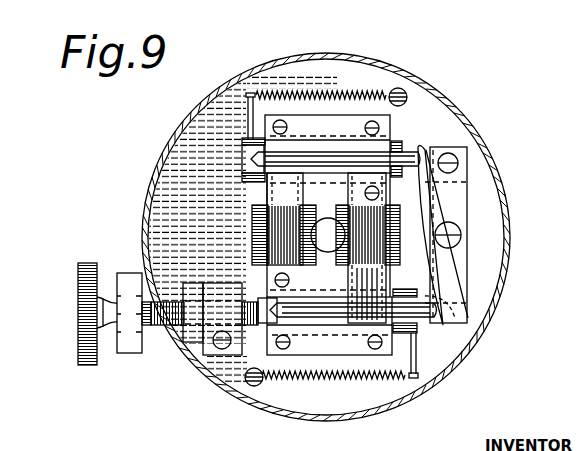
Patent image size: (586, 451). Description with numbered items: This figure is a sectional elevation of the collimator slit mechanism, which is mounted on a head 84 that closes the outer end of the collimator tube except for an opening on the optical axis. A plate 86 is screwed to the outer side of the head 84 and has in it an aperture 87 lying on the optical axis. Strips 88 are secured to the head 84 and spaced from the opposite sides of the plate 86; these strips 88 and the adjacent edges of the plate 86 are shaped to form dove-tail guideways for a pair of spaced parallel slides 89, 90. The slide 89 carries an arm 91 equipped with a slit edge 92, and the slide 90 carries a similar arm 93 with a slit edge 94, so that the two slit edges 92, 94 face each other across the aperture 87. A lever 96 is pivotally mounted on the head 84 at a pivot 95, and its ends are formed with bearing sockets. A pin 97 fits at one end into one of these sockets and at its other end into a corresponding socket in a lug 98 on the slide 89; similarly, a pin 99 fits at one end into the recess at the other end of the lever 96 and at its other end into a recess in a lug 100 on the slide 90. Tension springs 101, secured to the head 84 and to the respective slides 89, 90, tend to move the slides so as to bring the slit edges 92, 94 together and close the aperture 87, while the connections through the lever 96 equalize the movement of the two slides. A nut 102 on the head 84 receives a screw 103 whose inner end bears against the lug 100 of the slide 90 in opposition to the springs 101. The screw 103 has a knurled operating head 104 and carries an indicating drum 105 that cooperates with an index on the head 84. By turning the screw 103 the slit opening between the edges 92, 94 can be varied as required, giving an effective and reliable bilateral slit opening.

The head 84 is at (438, 105).
The plate 86 is at (265, 186).
The aperture 87 is at (329, 218).
The strips 88 is at (356, 118).
The slide 89 is at (398, 142).
The slide 90 is at (425, 333).
The arm 91 is at (282, 220).
The slit edge 92 is at (292, 278).
The arm 93 is at (384, 263).
The slit edge 94 is at (347, 211).
The pivot 95 is at (470, 224).
The lever 96 is at (445, 207).
The pin 97 is at (418, 148).
The lug 98 is at (243, 150).
The pin 99 is at (426, 326).
The lug 100 is at (263, 337).
The tension springs 101 is at (305, 93).
The nut 102 is at (212, 326).
The screw 103 is at (168, 325).
The knurled operating head 104 is at (56, 365).
The indicating drum 105 is at (125, 275).